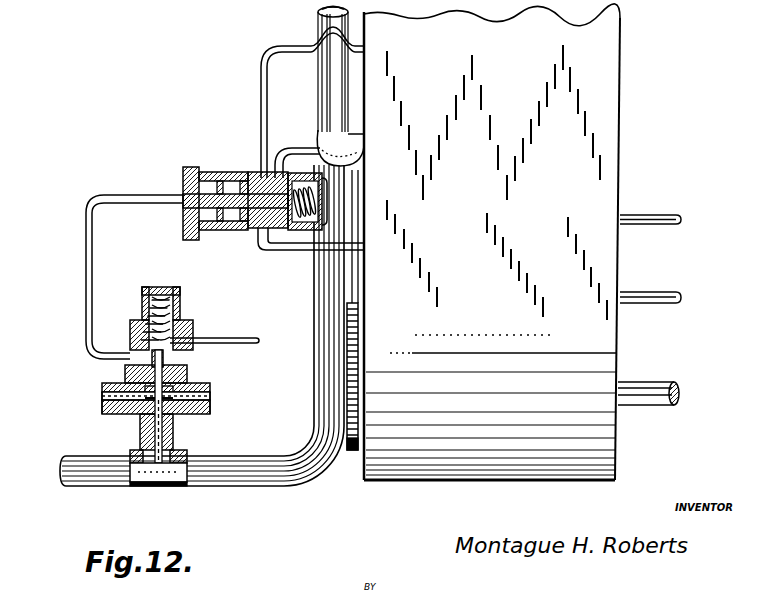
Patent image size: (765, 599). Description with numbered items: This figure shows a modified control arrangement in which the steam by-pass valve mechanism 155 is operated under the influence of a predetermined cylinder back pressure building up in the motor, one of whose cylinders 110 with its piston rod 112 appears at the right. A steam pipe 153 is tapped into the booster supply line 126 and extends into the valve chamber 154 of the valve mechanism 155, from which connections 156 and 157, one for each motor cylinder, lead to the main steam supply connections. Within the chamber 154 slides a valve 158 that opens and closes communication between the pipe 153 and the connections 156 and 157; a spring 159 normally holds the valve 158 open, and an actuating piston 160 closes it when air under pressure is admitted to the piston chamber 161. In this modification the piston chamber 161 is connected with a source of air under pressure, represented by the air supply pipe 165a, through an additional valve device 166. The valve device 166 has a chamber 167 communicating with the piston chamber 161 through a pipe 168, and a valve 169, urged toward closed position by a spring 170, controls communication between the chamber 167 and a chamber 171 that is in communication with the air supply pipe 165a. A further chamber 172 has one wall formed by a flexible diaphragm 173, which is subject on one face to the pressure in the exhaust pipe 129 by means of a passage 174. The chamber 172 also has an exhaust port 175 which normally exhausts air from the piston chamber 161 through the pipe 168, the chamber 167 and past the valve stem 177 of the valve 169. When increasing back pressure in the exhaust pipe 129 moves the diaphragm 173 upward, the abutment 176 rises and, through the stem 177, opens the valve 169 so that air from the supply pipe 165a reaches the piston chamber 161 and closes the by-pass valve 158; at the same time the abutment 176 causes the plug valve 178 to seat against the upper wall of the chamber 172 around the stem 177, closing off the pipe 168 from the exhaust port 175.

The cylinder 110 is at (351, 455).
The piston rod 112 is at (658, 406).
The booster supply line 126 is at (330, 78).
The exhaust pipe 129 is at (254, 487).
The steam pipe 153 is at (304, 148).
The valve chamber 154 is at (268, 244).
The valve mechanism 155 is at (230, 207).
The connection 156 is at (360, 251).
The connection 157 is at (298, 46).
The valve 158 is at (251, 229).
The spring 159 is at (308, 224).
The actuating piston 160 is at (185, 210).
The piston chamber 161 is at (185, 186).
The air supply pipe 165a is at (233, 338).
The valve device 166 is at (161, 370).
The chamber 167 is at (172, 364).
The pipe 168 is at (86, 286).
The valve 169 is at (140, 346).
The spring 170 is at (155, 322).
The chamber 171 is at (180, 314).
The chamber 172 is at (106, 396).
The flexible diaphragm 173 is at (180, 414).
The passage 174 is at (152, 450).
The exhaust port 175 is at (190, 372).
The abutment 176 is at (200, 396).
The valve stem 177 is at (126, 370).
The plug valve 178 is at (140, 416).